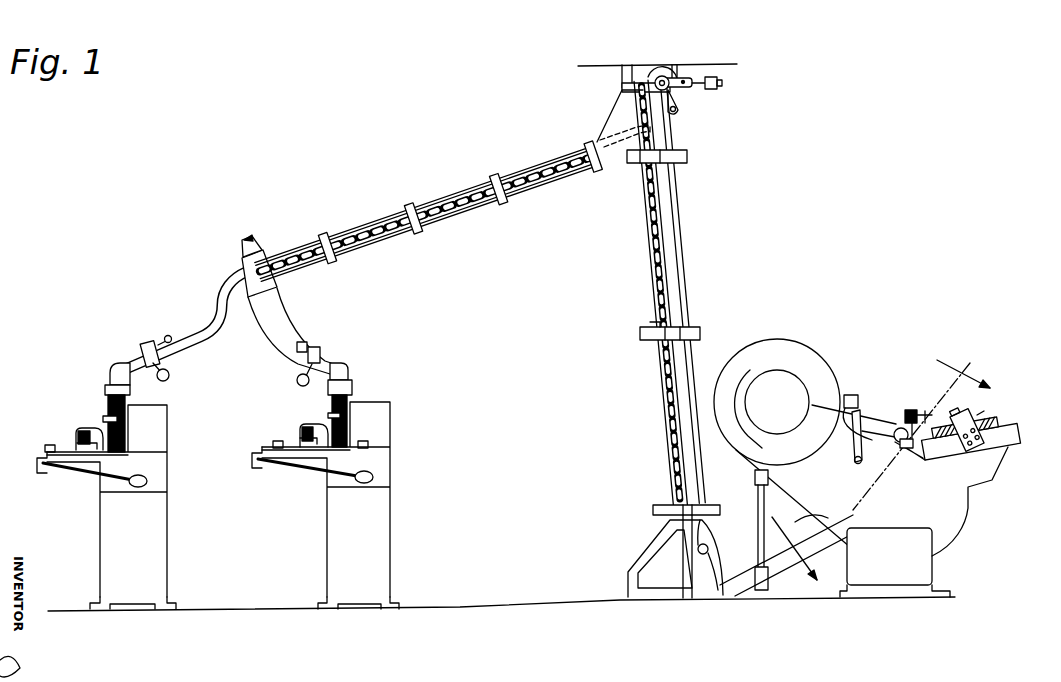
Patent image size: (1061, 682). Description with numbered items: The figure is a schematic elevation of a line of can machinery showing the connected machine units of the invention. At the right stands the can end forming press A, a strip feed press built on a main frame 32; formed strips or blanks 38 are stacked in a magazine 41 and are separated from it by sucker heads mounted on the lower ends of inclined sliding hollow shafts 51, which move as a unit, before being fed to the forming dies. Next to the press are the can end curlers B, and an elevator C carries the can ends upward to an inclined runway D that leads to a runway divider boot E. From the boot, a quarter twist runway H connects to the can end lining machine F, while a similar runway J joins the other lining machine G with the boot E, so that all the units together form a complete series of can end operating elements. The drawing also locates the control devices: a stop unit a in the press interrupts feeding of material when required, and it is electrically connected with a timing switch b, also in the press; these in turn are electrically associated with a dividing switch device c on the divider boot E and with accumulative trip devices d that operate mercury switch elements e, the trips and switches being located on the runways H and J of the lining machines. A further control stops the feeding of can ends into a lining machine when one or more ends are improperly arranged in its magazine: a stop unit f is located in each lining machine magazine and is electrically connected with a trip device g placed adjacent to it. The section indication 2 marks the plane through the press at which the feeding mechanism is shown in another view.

The housing A is at (960, 518).
The tray B is at (800, 568).
The vertical conveyor C is at (655, 233).
The inclined conveyor D is at (468, 192).
The distributor head E is at (241, 268).
The first machine F is at (160, 538).
The second machine G is at (383, 524).
The flexible conduit H is at (220, 303).
The flexible conduit J is at (290, 305).
The clamp a is at (930, 390).
The roller b is at (891, 456).
The nozzle c is at (252, 238).
The hose clamp d is at (134, 337).
The knob e is at (193, 379).
The bracket f is at (78, 433).
The post g is at (88, 398).
The section line 2- 2 is at (879, 462).
The base box 32 is at (895, 546).
The cutter block 38 is at (995, 423).
The tray 41 is at (1013, 440).
The lever 51 is at (862, 407).